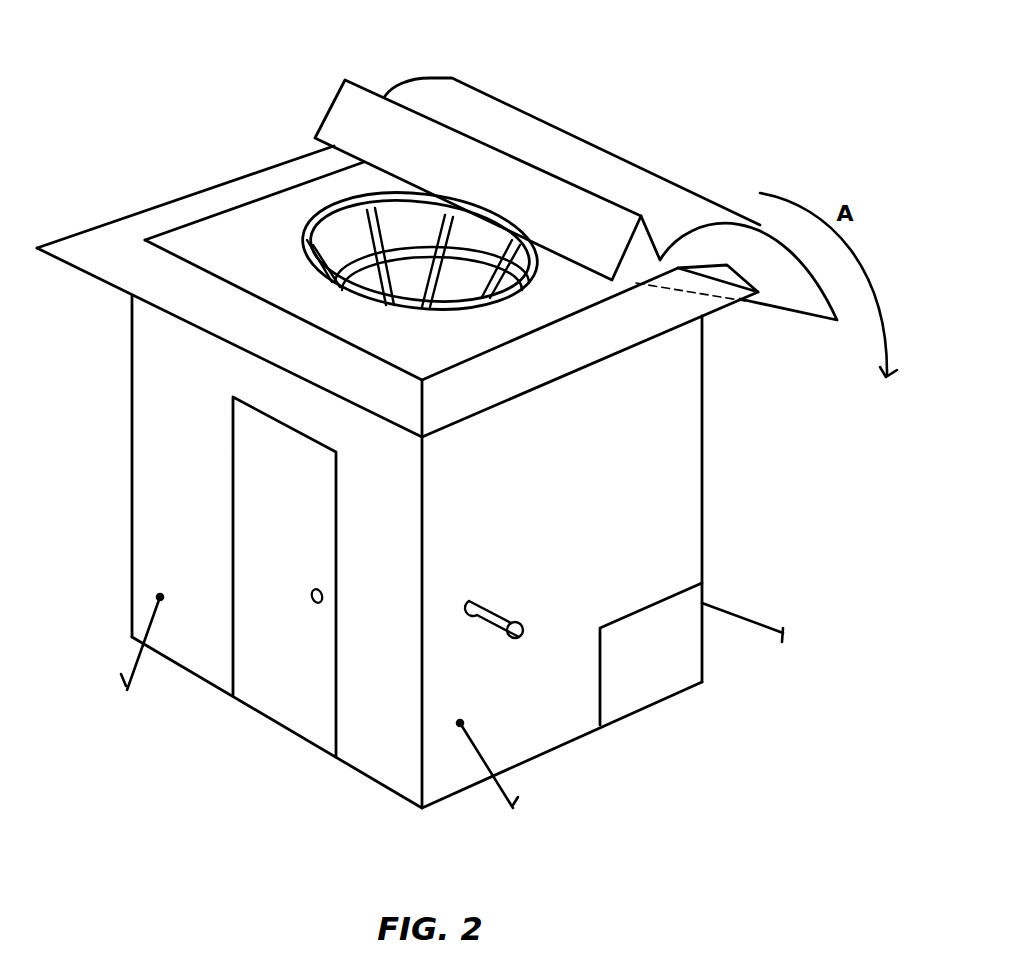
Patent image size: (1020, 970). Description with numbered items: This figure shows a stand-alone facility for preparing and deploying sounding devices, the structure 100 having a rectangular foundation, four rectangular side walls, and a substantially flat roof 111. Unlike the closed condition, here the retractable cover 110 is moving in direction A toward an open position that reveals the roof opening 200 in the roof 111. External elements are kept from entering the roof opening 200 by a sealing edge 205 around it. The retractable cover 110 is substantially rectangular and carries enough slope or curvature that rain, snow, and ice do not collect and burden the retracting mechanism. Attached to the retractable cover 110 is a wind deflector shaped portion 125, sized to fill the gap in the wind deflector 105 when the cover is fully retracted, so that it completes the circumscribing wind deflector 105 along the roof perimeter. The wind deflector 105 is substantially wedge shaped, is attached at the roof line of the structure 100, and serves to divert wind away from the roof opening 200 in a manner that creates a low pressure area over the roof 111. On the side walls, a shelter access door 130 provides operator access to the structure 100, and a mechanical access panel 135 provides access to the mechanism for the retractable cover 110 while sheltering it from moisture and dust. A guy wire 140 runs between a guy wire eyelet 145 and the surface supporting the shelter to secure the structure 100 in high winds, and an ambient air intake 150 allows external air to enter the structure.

The structure 100 is at (742, 484).
The wind deflector 105 is at (688, 302).
The retractable cover 110 is at (607, 163).
The roof 111 is at (222, 245).
The wind deflector shaped portion 125 is at (356, 108).
The shelter access door 130 is at (275, 663).
The mechanical access panel 135 is at (660, 668).
The guy wire 140 is at (140, 647).
The guy wire eyelet 145 is at (158, 597).
The ambient air intake 150 is at (499, 638).
The roof opening 200 is at (346, 230).
The sealing edge 205 is at (303, 240).